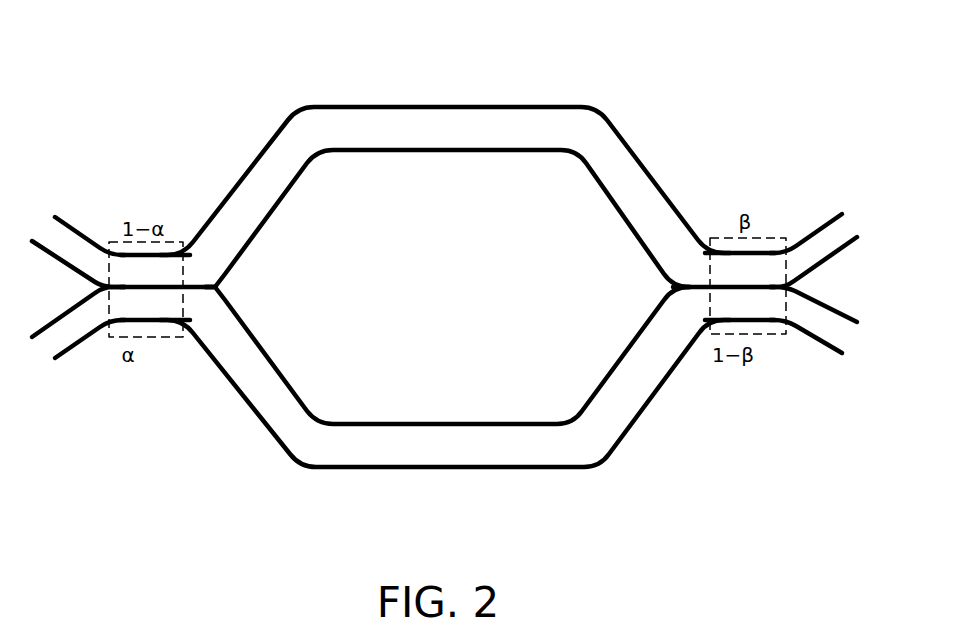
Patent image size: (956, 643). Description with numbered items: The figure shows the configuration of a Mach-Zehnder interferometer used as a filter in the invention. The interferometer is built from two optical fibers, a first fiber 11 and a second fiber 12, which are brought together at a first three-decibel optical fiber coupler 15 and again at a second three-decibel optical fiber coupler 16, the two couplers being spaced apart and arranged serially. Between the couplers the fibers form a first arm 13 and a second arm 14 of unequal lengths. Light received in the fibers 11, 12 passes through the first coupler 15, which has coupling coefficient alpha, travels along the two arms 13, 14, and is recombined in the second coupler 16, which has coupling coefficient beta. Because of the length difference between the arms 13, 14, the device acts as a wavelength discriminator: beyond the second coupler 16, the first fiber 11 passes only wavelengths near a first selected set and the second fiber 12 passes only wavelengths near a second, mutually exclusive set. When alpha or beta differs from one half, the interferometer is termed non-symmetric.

The first fiber 11 is at (67, 242).
The second fiber 12 is at (62, 338).
The first arm 13 is at (498, 85).
The second arm 14 is at (483, 480).
The first 3 dB optical fiber coupler 15 is at (146, 335).
The second 3 dB optical fiber coupler 16 is at (759, 327).